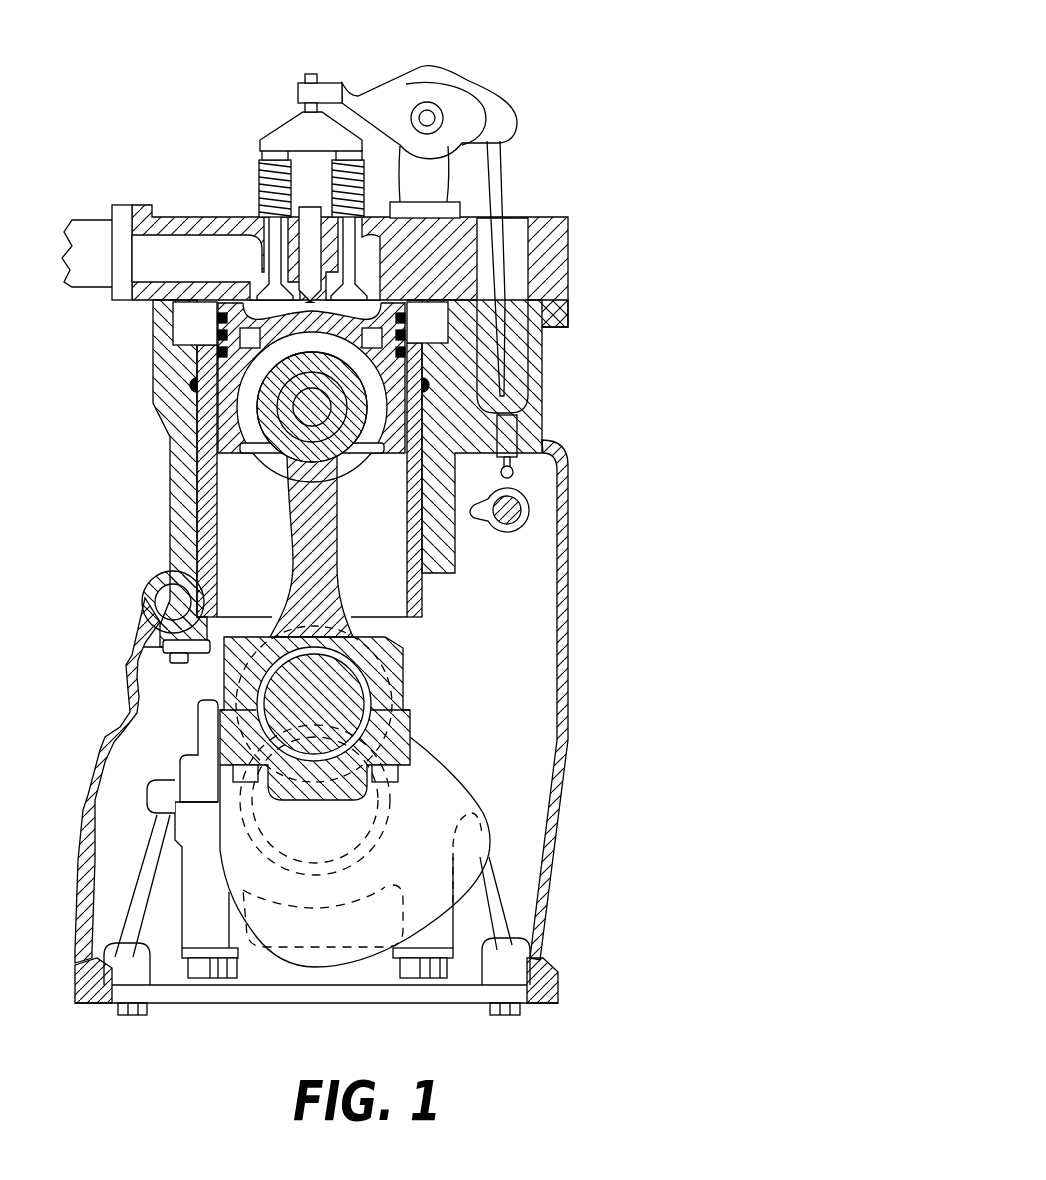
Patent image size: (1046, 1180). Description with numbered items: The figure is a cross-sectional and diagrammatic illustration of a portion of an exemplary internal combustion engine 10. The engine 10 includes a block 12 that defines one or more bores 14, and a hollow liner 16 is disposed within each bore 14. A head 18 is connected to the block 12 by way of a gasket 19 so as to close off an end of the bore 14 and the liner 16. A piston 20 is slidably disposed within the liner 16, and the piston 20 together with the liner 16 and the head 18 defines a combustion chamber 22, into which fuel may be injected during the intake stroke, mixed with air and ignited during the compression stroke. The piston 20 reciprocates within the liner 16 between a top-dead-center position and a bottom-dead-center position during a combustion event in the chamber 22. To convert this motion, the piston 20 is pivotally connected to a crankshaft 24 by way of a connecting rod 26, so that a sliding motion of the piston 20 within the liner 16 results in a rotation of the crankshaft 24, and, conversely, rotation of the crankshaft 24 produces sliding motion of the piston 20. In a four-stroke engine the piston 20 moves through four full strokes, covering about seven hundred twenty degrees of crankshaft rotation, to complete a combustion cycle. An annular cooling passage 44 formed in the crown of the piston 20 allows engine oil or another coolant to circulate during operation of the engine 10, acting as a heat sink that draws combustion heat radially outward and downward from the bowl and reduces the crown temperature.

The internal combustion engine 10 is at (607, 40).
The block 12 is at (461, 437).
The bore 14 is at (413, 570).
The hollow liner 16 is at (421, 637).
The head 18 is at (444, 267).
The gasket 19 is at (185, 300).
The piston 20 is at (321, 334).
The combustion chamber 22 is at (247, 305).
The crankshaft 24 is at (324, 699).
The connecting rod 26 is at (321, 531).
The annular cooling passage 44 is at (250, 338).